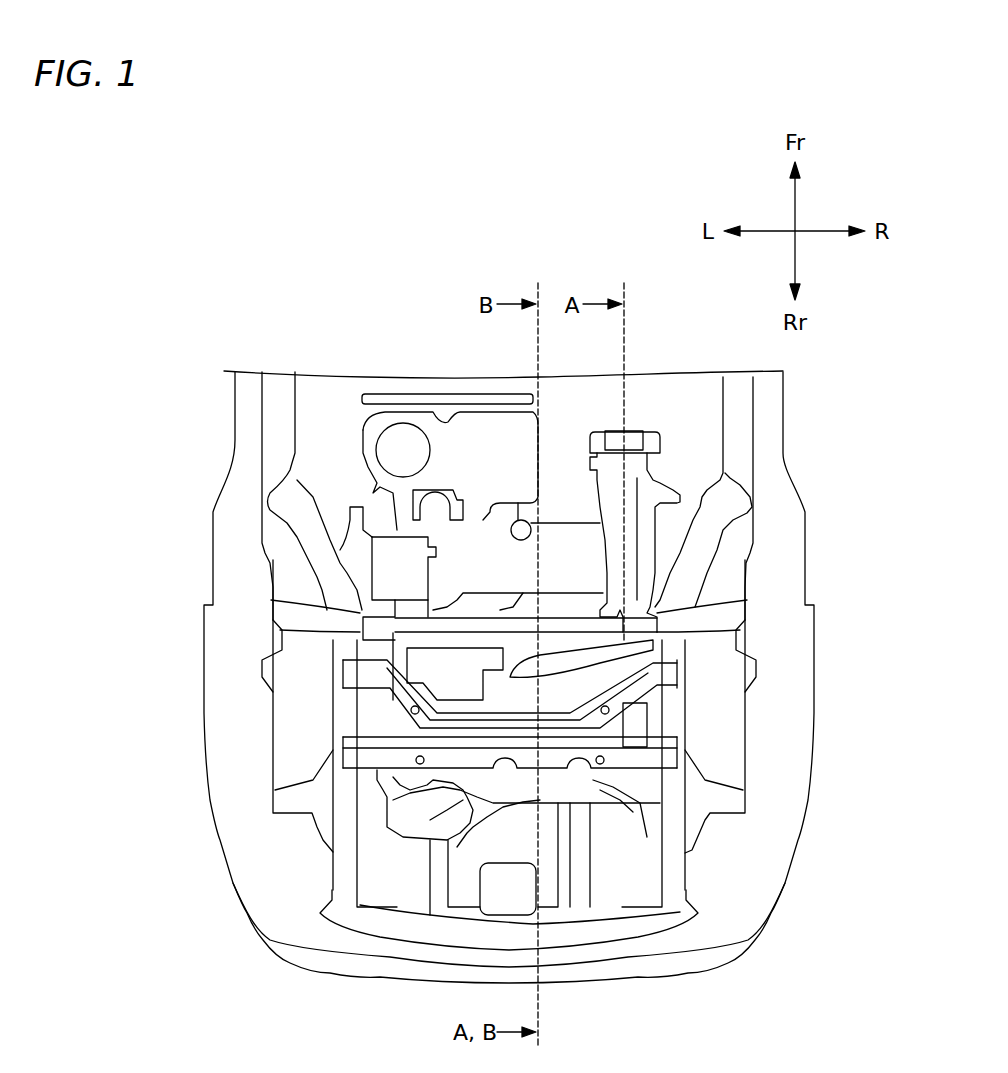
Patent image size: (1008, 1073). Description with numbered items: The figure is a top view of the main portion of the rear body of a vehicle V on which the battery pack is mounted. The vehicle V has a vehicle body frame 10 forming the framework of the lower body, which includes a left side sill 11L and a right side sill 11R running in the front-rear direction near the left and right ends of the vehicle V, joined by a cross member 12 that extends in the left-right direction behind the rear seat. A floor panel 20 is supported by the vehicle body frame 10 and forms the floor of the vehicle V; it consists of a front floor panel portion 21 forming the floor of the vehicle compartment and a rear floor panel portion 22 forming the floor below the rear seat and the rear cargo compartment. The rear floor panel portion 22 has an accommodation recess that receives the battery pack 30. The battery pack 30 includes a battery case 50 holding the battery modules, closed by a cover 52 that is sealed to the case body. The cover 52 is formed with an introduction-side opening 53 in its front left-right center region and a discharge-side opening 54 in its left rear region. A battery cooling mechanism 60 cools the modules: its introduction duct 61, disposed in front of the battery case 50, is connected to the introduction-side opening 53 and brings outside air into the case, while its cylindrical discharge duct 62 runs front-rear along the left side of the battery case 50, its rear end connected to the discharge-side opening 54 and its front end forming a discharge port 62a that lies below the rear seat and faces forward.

The vehicle V is at (253, 353).
The vehicle body frame 10 is at (503, 594).
The left side sill 11L is at (340, 600).
The right side sill 11R is at (680, 600).
The cross member 12 is at (483, 625).
The floor panel 20 is at (528, 673).
The front floor panel portion 21 is at (452, 408).
The rear floor panel portion 22 is at (597, 890).
The battery pack 30 is at (509, 821).
The battery case 50 is at (558, 842).
The cover 52 is at (600, 780).
The introduction-side opening 53 is at (540, 680).
The discharge-side opening 54 is at (473, 833).
The battery cooling mechanism 60 is at (502, 528).
The introduction duct 61 is at (650, 472).
The discharge duct 62 is at (400, 578).
The discharge port 62a is at (397, 527).